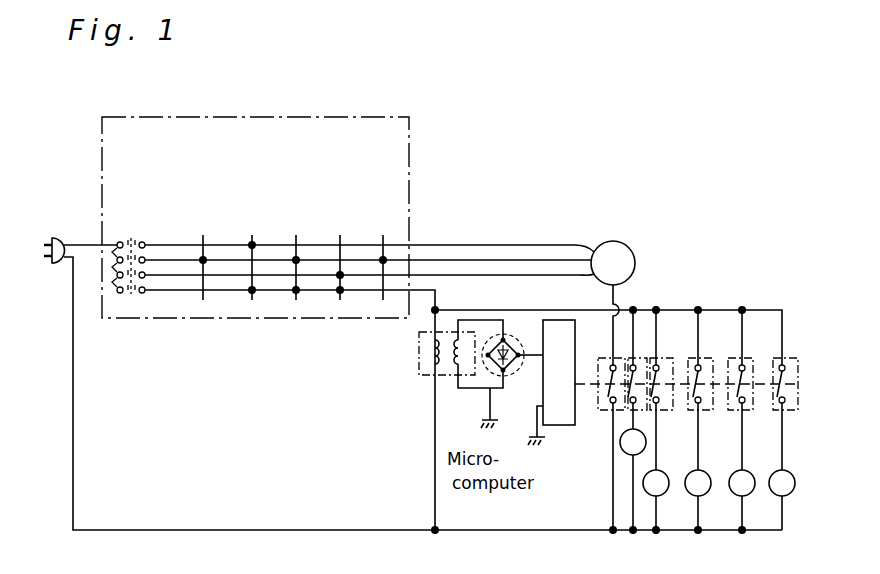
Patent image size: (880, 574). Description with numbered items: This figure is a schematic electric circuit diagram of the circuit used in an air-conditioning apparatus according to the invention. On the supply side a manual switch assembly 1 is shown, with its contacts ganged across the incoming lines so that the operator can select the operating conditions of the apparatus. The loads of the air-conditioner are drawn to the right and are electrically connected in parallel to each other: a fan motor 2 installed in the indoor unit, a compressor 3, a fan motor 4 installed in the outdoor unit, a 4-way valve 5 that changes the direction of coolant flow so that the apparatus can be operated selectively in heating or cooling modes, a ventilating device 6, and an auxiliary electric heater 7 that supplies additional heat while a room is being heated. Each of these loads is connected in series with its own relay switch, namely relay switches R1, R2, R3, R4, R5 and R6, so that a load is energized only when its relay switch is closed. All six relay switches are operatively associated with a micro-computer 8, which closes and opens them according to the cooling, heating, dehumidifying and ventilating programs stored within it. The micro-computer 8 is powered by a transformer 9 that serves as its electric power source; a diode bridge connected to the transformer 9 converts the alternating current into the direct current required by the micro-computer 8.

The manual switch assembly 1 is at (231, 319).
The fan motor 2 is at (616, 241).
The compressor 3 is at (622, 450).
The fan motor 4 is at (665, 472).
The 4-way valve 5 is at (707, 472).
The ventilating device 6 is at (751, 472).
The auxiliary electric heater 7 is at (790, 472).
The micro-computer 8 is at (561, 427).
The transformer 9 is at (418, 360).
The relay switch R1 is at (606, 360).
The relay switch R2 is at (646, 358).
The relay switch R3 is at (660, 358).
The relay switch R4 is at (712, 358).
The relay switch R5 is at (738, 358).
The relay switch R6 is at (796, 358).